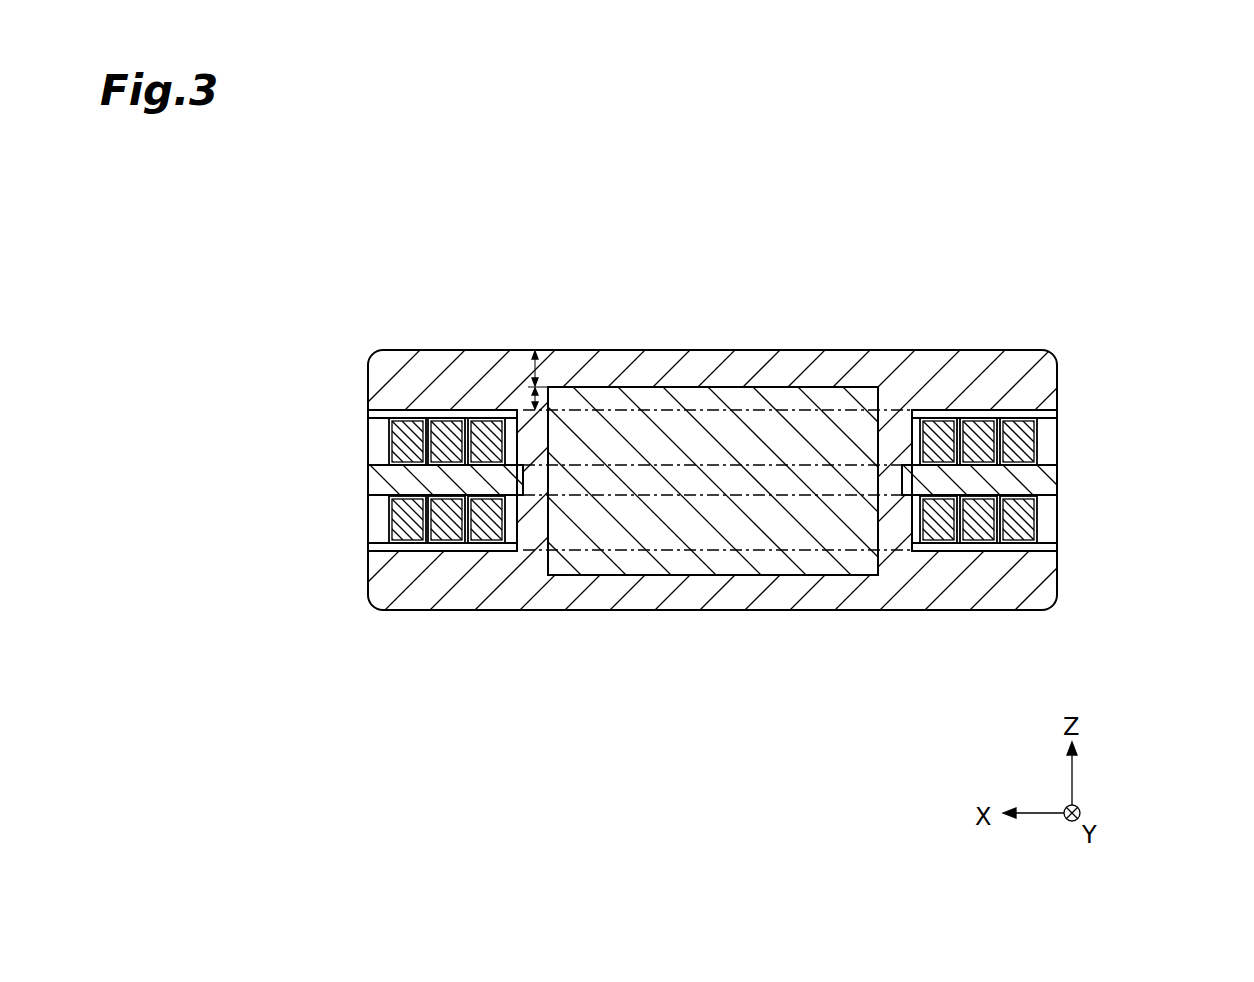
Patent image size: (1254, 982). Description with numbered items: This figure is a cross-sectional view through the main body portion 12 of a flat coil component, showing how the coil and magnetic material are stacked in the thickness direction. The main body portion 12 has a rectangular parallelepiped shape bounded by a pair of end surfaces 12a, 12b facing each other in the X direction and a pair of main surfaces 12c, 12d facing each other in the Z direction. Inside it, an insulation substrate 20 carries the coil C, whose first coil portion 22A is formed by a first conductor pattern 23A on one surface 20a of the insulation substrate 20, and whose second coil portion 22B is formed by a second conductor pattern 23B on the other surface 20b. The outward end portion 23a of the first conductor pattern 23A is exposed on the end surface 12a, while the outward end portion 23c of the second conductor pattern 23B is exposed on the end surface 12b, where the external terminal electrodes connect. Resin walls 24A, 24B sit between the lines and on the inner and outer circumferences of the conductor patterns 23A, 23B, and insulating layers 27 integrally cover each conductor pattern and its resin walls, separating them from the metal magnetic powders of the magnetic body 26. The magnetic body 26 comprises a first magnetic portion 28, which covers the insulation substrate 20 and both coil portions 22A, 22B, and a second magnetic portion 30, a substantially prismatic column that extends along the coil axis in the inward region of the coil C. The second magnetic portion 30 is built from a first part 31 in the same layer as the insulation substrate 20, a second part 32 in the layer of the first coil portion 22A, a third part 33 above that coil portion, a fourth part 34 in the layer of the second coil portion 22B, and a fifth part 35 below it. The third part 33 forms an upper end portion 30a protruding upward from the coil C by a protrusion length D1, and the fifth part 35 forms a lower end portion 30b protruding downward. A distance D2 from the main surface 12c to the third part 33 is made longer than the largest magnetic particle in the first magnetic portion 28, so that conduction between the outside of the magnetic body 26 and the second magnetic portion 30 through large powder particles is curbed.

The main body portion 12 is at (366, 237).
The end surface 12a is at (1057, 575).
The end surface 12b is at (368, 580).
The main surface 12c is at (583, 350).
The main surface 12d is at (540, 610).
The insulation substrate 20 is at (1057, 480).
The one surface of the insulation substrate 20a is at (1057, 465).
The other surface of the insulation substrate 20b is at (1057, 495).
The first coil portion 22A is at (1072, 440).
The second coil portion 22B is at (1055, 520).
The first conductor pattern 23A is at (487, 425).
The second conductor pattern 23B is at (485, 535).
The end portion of the first conductor pattern on the outward side 23a is at (1033, 430).
The end portion of the second conductor pattern on the outward side 23c is at (378, 523).
The resin wall 24A is at (1000, 425).
The resin wall 24B is at (1000, 540).
The magnetic body 26 is at (712, 399).
The insulating layer 27 is at (1057, 412).
The first magnetic portion 28 is at (713, 325).
The second magnetic portion 30 is at (865, 383).
The upper end portion 30a is at (790, 400).
The lower end portion 30b is at (650, 572).
The first part 31 is at (628, 473).
The second part 32 is at (680, 430).
The third part 33 is at (737, 402).
The fourth part 34 is at (803, 537).
The fifth part 35 is at (857, 562).
The coil C is at (356, 405).
The protrusion length D1 is at (532, 398).
The distance D2 is at (537, 361).